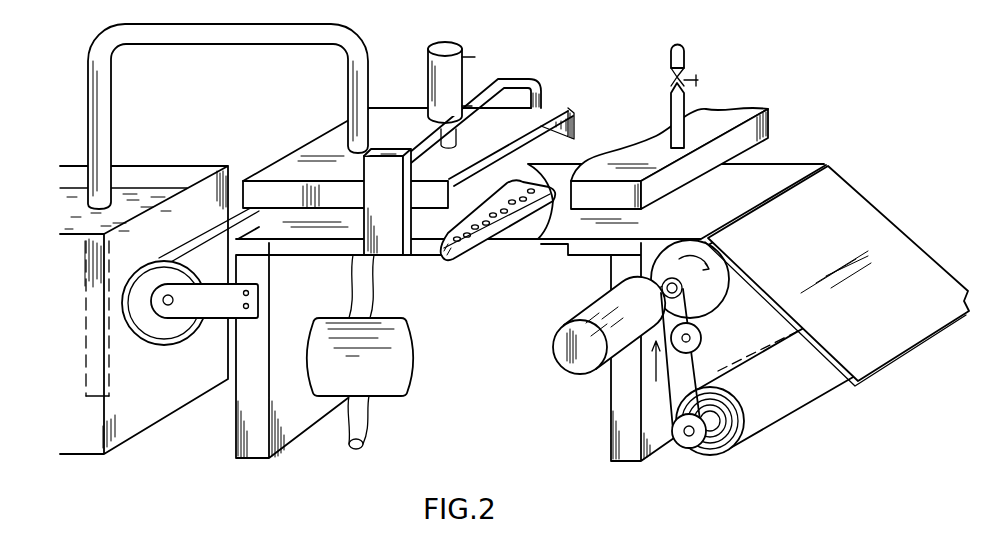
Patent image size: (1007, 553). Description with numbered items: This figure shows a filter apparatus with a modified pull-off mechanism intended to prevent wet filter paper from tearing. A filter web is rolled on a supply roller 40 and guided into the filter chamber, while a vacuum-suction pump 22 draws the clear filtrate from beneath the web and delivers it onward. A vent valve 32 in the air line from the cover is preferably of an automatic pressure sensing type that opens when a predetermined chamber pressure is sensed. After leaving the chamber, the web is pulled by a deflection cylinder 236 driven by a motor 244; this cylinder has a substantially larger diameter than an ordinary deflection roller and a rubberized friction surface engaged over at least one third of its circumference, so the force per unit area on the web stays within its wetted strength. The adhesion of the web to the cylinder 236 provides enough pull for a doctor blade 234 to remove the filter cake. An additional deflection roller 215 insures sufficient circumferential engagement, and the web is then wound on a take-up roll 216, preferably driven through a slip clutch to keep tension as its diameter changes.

The vacuum-suction pump 22 is at (390, 393).
The vent valve 32 is at (680, 73).
The supply roller 40 is at (172, 330).
The additional deflection roller 215 is at (677, 347).
The take-up roll 216 is at (760, 417).
The doctor blade 234 is at (838, 200).
The deflection cylinder 236 is at (667, 268).
The motor 244 is at (570, 338).